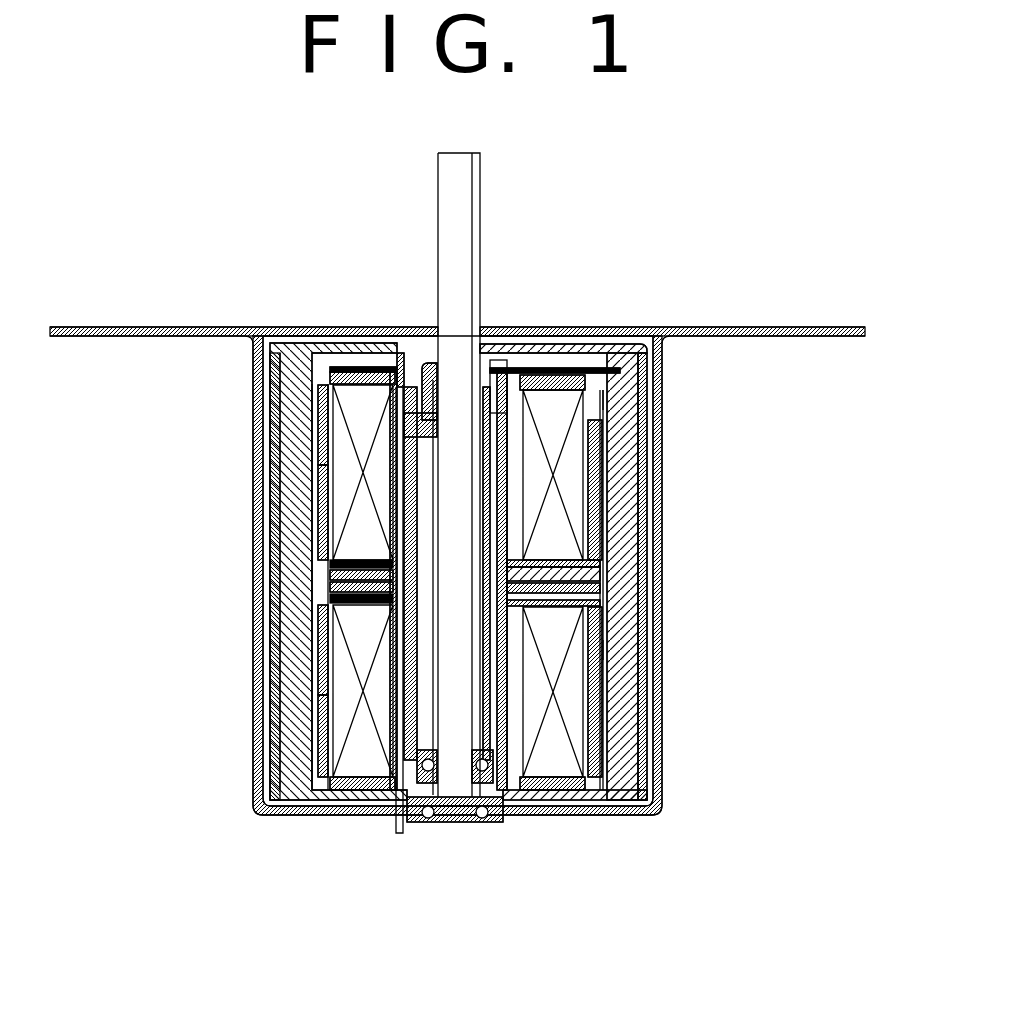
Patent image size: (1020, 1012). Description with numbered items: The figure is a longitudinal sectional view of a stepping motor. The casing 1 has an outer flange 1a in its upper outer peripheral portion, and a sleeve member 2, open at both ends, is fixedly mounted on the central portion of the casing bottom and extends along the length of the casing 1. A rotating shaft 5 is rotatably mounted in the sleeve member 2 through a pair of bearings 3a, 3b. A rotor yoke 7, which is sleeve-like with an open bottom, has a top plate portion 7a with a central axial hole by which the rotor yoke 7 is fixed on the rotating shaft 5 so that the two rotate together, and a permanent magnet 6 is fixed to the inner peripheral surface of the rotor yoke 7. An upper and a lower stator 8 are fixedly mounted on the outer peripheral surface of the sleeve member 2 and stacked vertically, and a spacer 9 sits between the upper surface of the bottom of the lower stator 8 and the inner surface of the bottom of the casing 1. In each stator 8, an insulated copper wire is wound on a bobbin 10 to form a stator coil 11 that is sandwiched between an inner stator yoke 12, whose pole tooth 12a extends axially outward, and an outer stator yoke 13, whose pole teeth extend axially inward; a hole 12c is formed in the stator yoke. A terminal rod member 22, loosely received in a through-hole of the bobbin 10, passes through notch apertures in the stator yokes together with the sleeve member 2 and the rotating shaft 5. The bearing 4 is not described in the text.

The casing 1 is at (657, 738).
The outer flange 1a is at (777, 328).
The sleeve member 2 is at (399, 352).
The bearing 3a is at (437, 419).
The bearing 3b is at (437, 822).
The bearing 4 is at (486, 823).
The rotating shaft 5 is at (468, 197).
The permanent magnet 6 is at (290, 605).
The rotor yoke 7 is at (643, 422).
The top plate portion 7a is at (577, 345).
The stator 8 is at (593, 398).
The spacer 9 is at (535, 790).
The bobbin 10 is at (392, 455).
The stator coil 11 is at (355, 512).
The inner stator yoke 12 is at (598, 572).
The pole tooth 12a is at (322, 465).
The hole 12c is at (322, 535).
The outer stator yoke 13 is at (543, 372).
The terminal rod member 22 is at (399, 830).